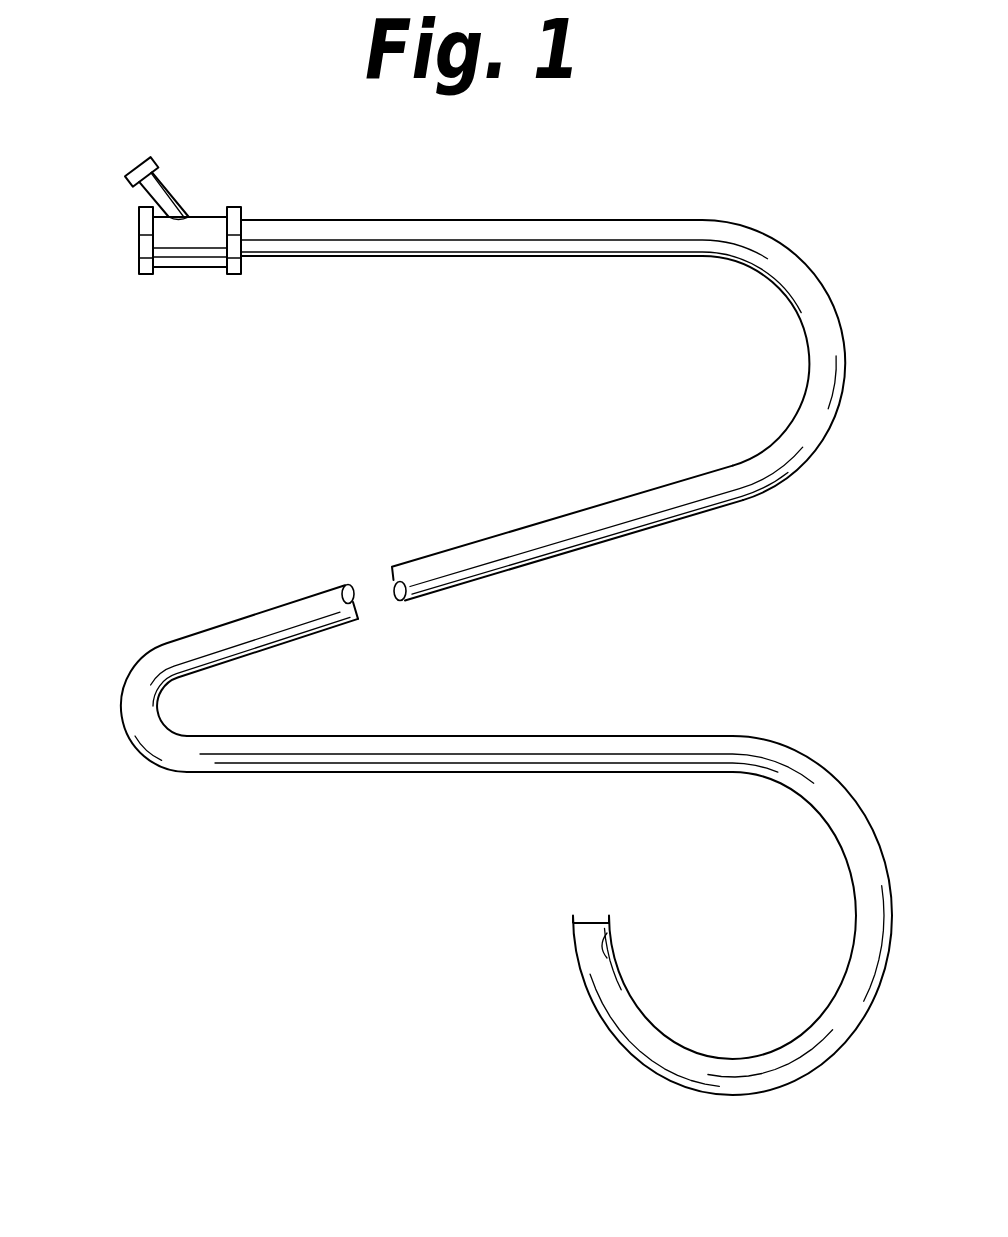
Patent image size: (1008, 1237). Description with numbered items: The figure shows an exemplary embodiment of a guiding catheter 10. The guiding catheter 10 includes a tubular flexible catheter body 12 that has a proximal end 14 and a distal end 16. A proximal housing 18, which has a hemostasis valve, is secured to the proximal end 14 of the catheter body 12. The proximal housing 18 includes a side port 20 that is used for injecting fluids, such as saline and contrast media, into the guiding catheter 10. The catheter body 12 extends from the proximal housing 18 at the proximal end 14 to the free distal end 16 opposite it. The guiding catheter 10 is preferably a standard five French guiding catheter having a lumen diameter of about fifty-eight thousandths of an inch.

The guiding catheter 10 is at (656, 645).
The catheter body 12 is at (533, 525).
The proximal end 14 is at (495, 218).
The distal end 16 is at (578, 923).
The proximal housing 18 is at (197, 263).
The side port 20 is at (137, 173).